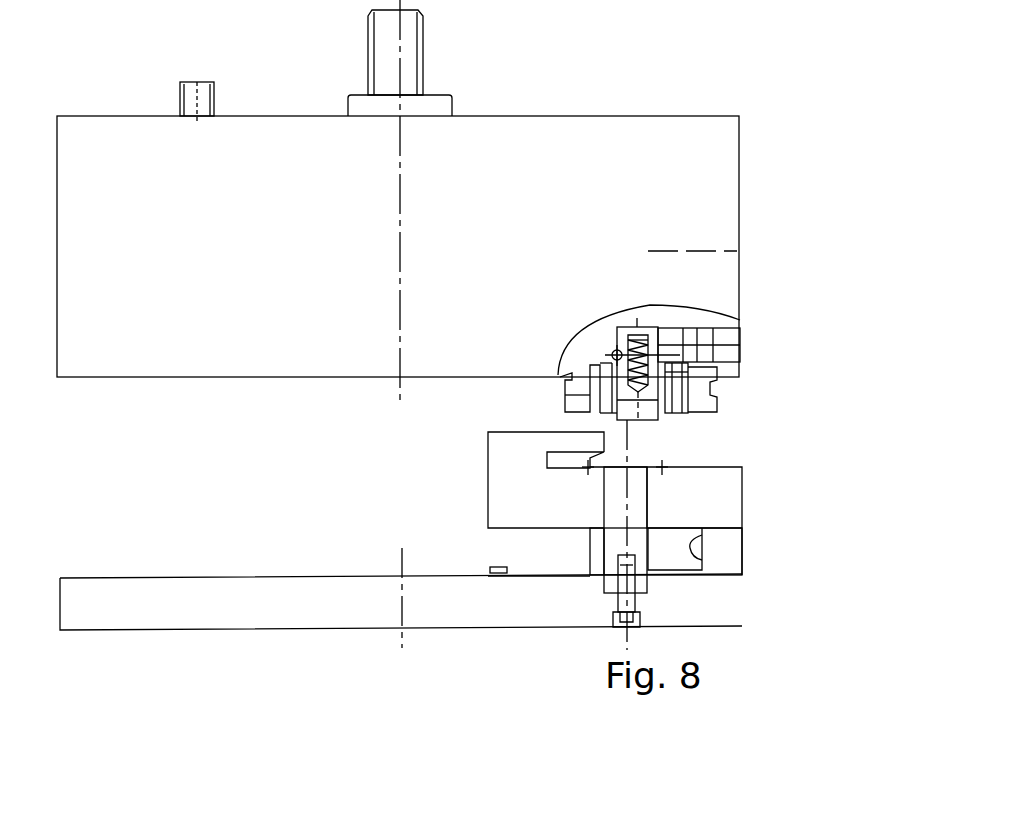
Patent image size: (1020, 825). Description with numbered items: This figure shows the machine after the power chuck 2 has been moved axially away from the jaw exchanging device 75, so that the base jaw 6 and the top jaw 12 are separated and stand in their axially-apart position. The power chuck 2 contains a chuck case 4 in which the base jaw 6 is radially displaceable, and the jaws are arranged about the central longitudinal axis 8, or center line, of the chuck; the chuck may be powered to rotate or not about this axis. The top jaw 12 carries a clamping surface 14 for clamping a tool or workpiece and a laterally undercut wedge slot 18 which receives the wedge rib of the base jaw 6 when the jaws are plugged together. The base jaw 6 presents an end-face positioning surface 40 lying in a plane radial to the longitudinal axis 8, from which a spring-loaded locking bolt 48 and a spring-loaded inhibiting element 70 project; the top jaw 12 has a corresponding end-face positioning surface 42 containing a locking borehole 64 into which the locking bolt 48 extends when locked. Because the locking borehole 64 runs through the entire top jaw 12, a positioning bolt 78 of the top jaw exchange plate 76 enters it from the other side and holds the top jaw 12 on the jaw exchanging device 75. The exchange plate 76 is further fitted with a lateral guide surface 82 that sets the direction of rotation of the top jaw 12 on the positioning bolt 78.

The power chuck 2 is at (513, 102).
The chuck case 4 is at (560, 135).
The base jaw 6 is at (727, 370).
The central longitudinal axis 8 is at (396, 384).
The top jaw 12 is at (725, 560).
The clamping surface 14 is at (692, 548).
The wedge slot 18 is at (568, 455).
The end-face positioning surface 40 is at (715, 412).
The end-face positioning surface 42 is at (713, 462).
The locking bolt 48 is at (648, 420).
The locking borehole 64 is at (640, 500).
The inhibiting element 70 is at (655, 408).
The jaw exchanging device 75 is at (382, 573).
The top jaw exchange plate 76 is at (216, 618).
The positioning bolt 78 is at (626, 591).
The lateral guide surface 82 is at (493, 570).